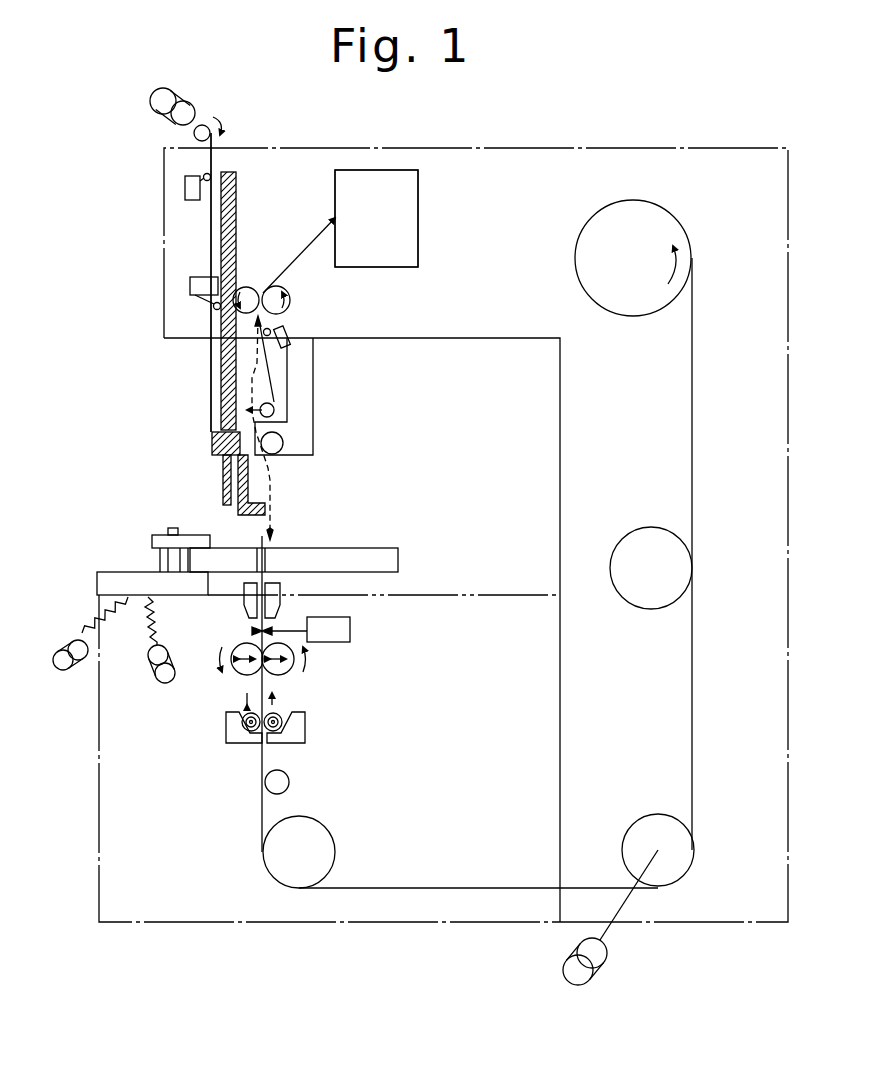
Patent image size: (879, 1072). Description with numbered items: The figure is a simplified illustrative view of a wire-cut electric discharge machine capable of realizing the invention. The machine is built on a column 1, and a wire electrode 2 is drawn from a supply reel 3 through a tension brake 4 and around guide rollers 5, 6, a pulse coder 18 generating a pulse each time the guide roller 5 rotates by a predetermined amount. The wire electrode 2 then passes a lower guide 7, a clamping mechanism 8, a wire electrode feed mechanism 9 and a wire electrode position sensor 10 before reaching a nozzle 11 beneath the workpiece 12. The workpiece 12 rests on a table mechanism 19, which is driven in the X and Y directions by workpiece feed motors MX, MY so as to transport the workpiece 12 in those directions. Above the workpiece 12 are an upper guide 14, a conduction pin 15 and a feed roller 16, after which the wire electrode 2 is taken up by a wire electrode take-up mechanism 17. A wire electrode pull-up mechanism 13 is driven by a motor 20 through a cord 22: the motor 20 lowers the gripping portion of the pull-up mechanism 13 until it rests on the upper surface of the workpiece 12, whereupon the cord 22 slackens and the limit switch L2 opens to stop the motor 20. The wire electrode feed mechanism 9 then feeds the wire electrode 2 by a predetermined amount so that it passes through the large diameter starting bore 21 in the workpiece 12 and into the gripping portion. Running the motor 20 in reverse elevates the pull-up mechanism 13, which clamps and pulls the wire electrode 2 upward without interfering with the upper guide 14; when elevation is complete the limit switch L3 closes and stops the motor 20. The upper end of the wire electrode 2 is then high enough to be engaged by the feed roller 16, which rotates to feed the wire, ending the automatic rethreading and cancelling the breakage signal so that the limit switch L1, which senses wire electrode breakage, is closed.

The column 1 is at (716, 920).
The wire electrode 2 is at (693, 462).
The supply reel 3 is at (641, 273).
The tension brake 4 is at (650, 605).
The guide roller 5 is at (652, 818).
The guide roller 6 is at (320, 852).
The lower guide 7 is at (288, 782).
The clamping mechanism 8 is at (300, 731).
The wire electrode feed mechanism 9 is at (274, 659).
The wire electrode position sensor 10 is at (350, 630).
The nozzle 11 is at (281, 608).
The workpiece 12 is at (373, 548).
The wire electrode pull-up mechanism 13 is at (240, 512).
The upper guide 14 is at (283, 444).
The conduction pin 15 is at (274, 409).
The feed roller 16 is at (292, 303).
The wire electrode take-up mechanism 17 is at (397, 256).
The pulse coder 18 is at (585, 975).
The table mechanism 19 is at (135, 572).
The motor 20 is at (185, 104).
The large diameter starting bore 21 is at (268, 556).
The cord 22 is at (211, 252).
The limit switch L1 is at (290, 334).
The limit switch L2 is at (183, 197).
The limit switch L3 is at (190, 287).
The workpiece feed motor MX is at (66, 670).
The workpiece feed motor MY is at (165, 682).